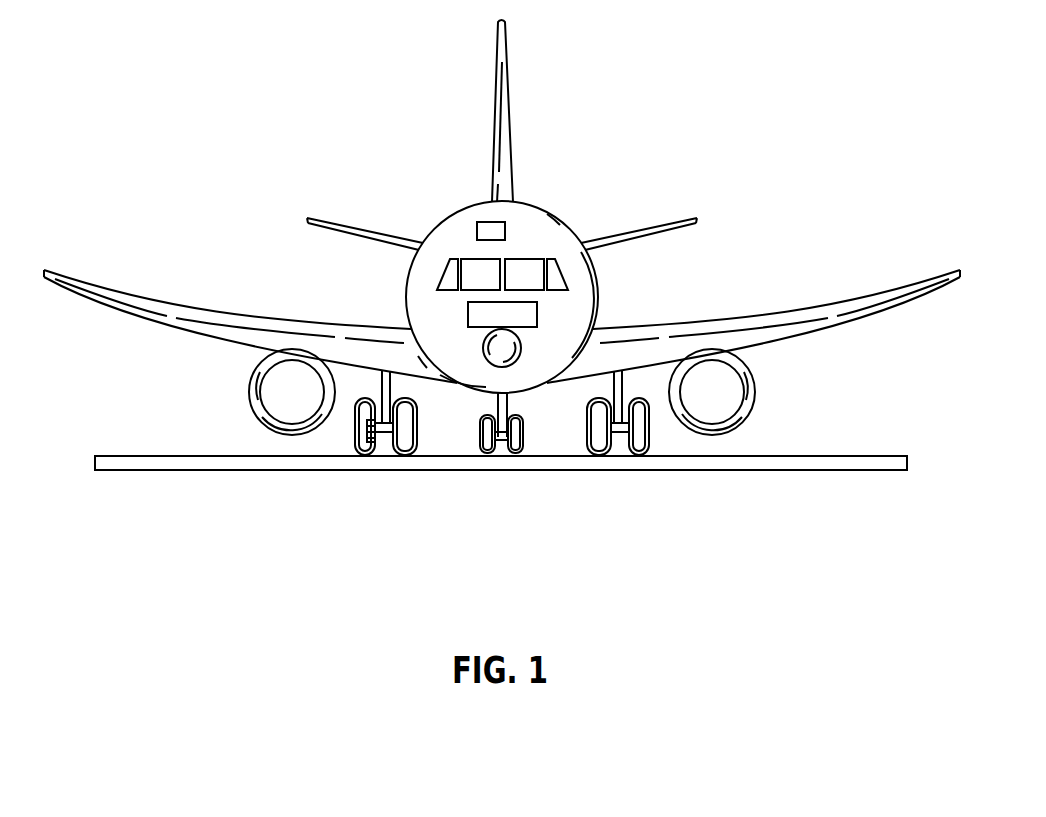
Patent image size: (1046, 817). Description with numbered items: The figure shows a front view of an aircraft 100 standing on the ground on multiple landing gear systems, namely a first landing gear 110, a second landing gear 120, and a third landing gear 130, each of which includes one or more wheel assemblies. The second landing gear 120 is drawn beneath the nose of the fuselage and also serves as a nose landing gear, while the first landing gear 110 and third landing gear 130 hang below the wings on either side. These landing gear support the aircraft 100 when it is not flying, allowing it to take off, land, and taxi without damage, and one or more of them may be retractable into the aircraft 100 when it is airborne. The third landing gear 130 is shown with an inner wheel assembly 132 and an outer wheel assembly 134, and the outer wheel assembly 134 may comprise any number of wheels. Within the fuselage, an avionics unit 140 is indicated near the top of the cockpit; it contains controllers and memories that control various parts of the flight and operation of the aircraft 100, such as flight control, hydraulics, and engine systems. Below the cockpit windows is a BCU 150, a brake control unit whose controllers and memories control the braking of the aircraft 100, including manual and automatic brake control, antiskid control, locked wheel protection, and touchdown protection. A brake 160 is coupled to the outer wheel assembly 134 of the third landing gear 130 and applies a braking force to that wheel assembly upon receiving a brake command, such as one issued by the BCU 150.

The aircraft 100 is at (346, 58).
The first landing gear 110 is at (648, 441).
The second landing gear 120 is at (527, 442).
The third landing gear 130 is at (373, 482).
The inner wheel assembly 132 is at (409, 456).
The outer wheel assembly 134 is at (364, 458).
The avionics unit 140 is at (505, 231).
The BCU 150 is at (537, 315).
The brake 160 is at (370, 458).